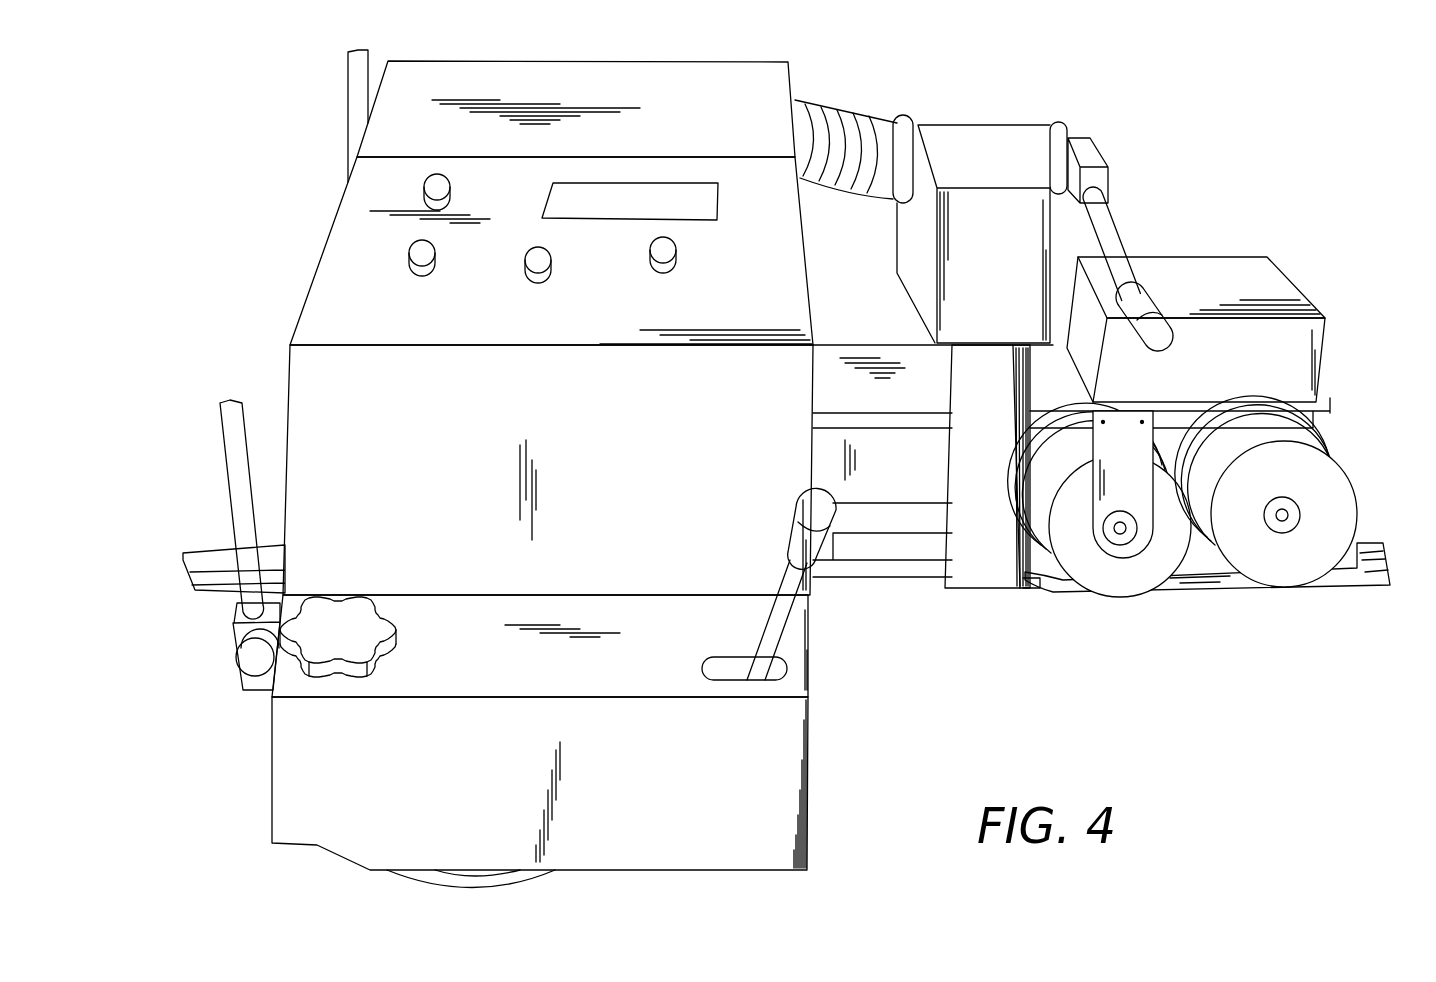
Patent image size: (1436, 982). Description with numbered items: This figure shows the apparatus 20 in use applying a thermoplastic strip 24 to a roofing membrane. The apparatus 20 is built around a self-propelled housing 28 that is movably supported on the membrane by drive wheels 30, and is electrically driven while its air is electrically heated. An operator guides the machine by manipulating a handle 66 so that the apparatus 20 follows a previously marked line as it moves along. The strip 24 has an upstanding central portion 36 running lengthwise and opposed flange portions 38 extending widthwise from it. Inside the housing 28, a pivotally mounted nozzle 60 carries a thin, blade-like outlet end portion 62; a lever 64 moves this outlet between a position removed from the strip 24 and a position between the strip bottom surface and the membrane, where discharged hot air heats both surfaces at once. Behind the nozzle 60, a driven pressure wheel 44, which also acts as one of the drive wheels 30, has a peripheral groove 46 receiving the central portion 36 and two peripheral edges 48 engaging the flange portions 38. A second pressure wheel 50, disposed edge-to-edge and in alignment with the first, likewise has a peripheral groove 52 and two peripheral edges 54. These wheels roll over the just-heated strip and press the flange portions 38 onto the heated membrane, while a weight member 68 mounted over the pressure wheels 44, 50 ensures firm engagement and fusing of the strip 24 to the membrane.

The apparatus 20 is at (791, 469).
The strip 24 is at (1210, 563).
The housing 28 is at (434, 470).
The drive wheels 30 is at (789, 645).
The central portion 36 is at (1370, 541).
The flange portions 38 is at (1231, 582).
The pressure wheel 44 is at (1078, 523).
The peripheral groove 46 is at (1062, 458).
The peripheral edges 48 is at (1077, 432).
The second pressure wheel 50 is at (1287, 517).
The peripheral groove 52 is at (1330, 437).
The peripheral edges 54 is at (1332, 430).
The nozzle 60 is at (964, 476).
The blade-like outlet end portion 62 is at (1030, 590).
The lever 64 is at (1110, 223).
The handle 66 is at (230, 450).
The weight member 68 is at (1217, 267).